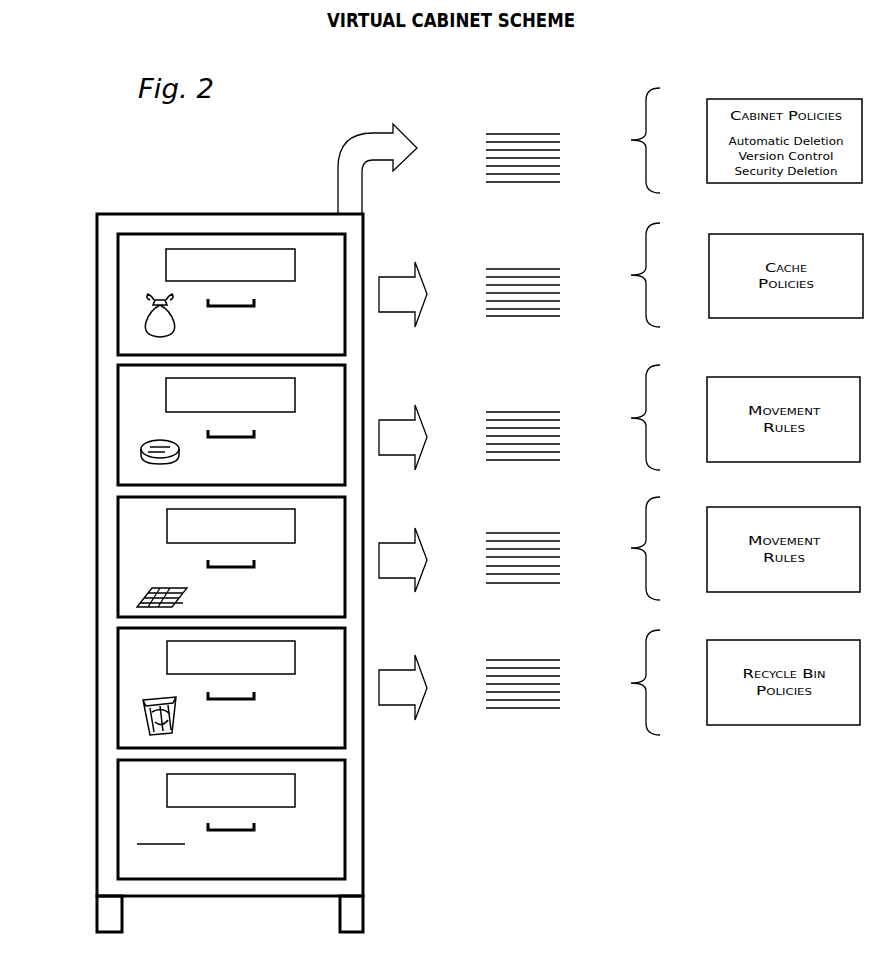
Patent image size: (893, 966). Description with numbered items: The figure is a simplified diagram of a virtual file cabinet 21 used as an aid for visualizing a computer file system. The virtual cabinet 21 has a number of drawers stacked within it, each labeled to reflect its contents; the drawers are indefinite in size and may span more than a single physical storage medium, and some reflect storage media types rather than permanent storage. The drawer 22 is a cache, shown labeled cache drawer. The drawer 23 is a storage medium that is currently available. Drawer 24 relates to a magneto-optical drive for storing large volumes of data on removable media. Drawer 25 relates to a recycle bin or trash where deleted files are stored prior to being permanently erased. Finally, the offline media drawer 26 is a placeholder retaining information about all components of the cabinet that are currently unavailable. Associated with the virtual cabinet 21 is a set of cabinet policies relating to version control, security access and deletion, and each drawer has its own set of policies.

The virtual file cabinet 21 is at (107, 241).
The cache drawer 22 is at (135, 316).
The online storage medium drawer 23 is at (130, 413).
The magneto-optical drive drawer 24 is at (125, 516).
The recycle bin drawer 25 is at (133, 657).
The offline media drawer 26 is at (128, 788).